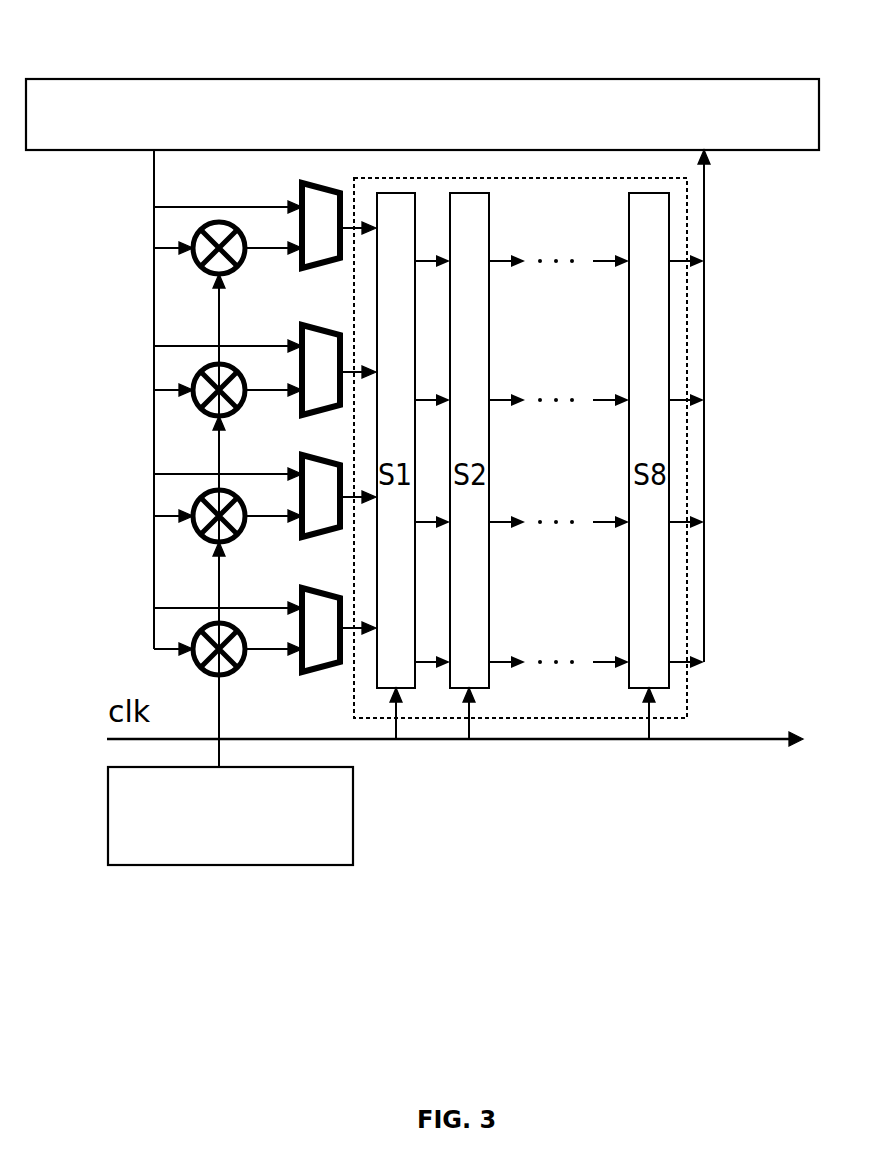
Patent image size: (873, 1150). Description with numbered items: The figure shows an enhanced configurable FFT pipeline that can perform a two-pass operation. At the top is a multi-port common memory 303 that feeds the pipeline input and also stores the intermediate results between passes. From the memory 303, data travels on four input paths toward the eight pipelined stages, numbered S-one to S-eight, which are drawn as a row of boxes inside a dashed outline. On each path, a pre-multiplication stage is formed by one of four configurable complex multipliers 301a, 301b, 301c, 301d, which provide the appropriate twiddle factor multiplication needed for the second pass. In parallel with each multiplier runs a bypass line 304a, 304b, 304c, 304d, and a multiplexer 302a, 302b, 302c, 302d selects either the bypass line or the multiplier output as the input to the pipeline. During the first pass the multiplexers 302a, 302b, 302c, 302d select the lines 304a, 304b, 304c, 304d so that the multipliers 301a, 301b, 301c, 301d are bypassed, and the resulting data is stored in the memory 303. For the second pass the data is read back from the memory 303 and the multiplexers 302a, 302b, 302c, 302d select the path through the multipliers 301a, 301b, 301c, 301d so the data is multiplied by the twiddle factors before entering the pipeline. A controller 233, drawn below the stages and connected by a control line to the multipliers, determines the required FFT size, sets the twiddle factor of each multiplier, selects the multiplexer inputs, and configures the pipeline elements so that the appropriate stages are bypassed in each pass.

The memory 303 is at (702, 79).
The line 304a is at (175, 207).
The line 304b is at (175, 346).
The line 304c is at (178, 474).
The line 304d is at (165, 608).
The configurable complex multiplier 301a is at (198, 268).
The configurable complex multiplier 301b is at (203, 412).
The configurable complex multiplier 301c is at (203, 533).
The configurable complex multiplier 301d is at (200, 667).
The multiplexer 302a is at (310, 268).
The multiplexer 302b is at (310, 415).
The multiplexer 302c is at (312, 543).
The multiplexer 302d is at (310, 672).
The controller 233 is at (353, 812).